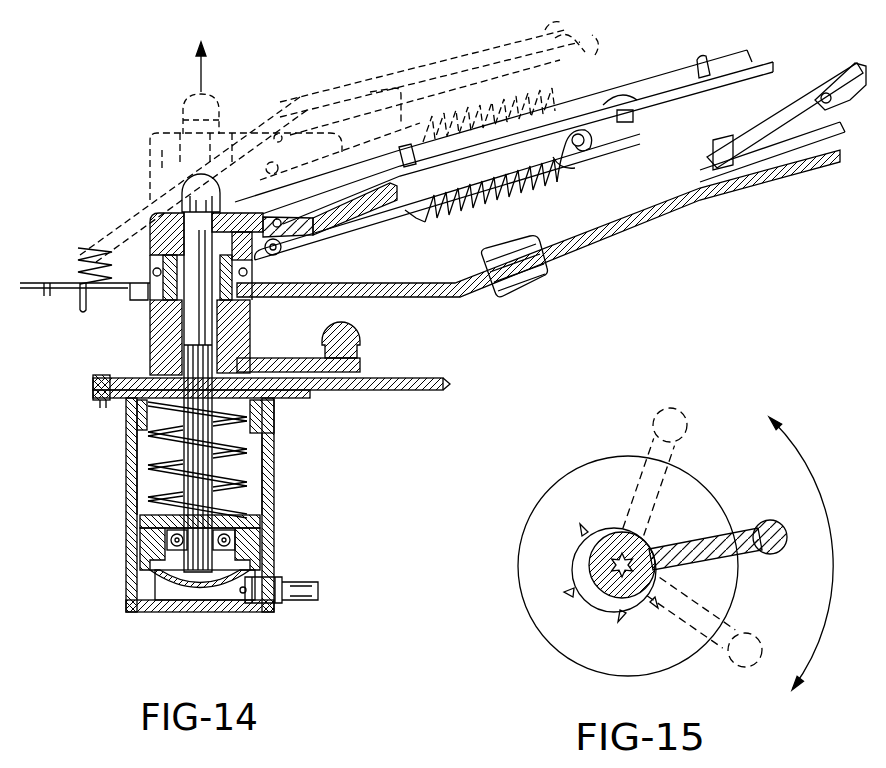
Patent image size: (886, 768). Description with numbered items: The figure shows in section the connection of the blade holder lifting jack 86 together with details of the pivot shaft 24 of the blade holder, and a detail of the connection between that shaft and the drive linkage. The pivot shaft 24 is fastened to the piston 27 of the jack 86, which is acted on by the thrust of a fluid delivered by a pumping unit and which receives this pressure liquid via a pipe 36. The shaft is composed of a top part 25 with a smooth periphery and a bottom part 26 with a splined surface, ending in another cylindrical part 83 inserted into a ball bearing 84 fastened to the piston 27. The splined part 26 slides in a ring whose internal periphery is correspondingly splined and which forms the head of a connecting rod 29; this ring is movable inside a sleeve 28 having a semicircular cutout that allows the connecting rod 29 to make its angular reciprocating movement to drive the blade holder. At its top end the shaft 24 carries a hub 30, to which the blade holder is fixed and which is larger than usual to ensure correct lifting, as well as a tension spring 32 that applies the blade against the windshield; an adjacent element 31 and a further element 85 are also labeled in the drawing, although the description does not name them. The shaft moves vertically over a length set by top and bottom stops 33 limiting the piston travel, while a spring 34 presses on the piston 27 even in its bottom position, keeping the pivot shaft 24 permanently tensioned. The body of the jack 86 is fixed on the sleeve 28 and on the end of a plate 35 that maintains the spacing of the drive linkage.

In FIG. 14, the pivot shaft 24 is at (160, 343).
In FIG. 14, the top part 25 is at (165, 235).
In FIG. 14, the bottom part 26 is at (148, 457).
In FIG. 14, the piston 27 is at (140, 552).
In FIG. 14, the sleeve 28 is at (150, 357).
In FIG. 15, the sleeve 28 is at (580, 548).
In FIG. 14, the connecting rod 29 is at (360, 358).
In FIG. 15, the connecting rod 29 is at (748, 522).
In FIG. 14, the hub 30 is at (330, 237).
In FIG. 14, the link 31 is at (397, 198).
In FIG. 14, the tension spring 32 is at (548, 190).
In FIG. 14, the top and bottom stops 33 is at (262, 565).
In FIG. 14, the spring 34 is at (247, 480).
In FIG. 14, the plate 35 is at (370, 398).
In FIG. 14, the pipe 36 is at (320, 588).
In FIG. 14, the cylindrical part 83 is at (190, 560).
In FIG. 14, the ball bearing 84 is at (225, 560).
In FIG. 14, the threaded shaft 85 is at (200, 365).
In FIG. 14, the jack 86 is at (110, 509).